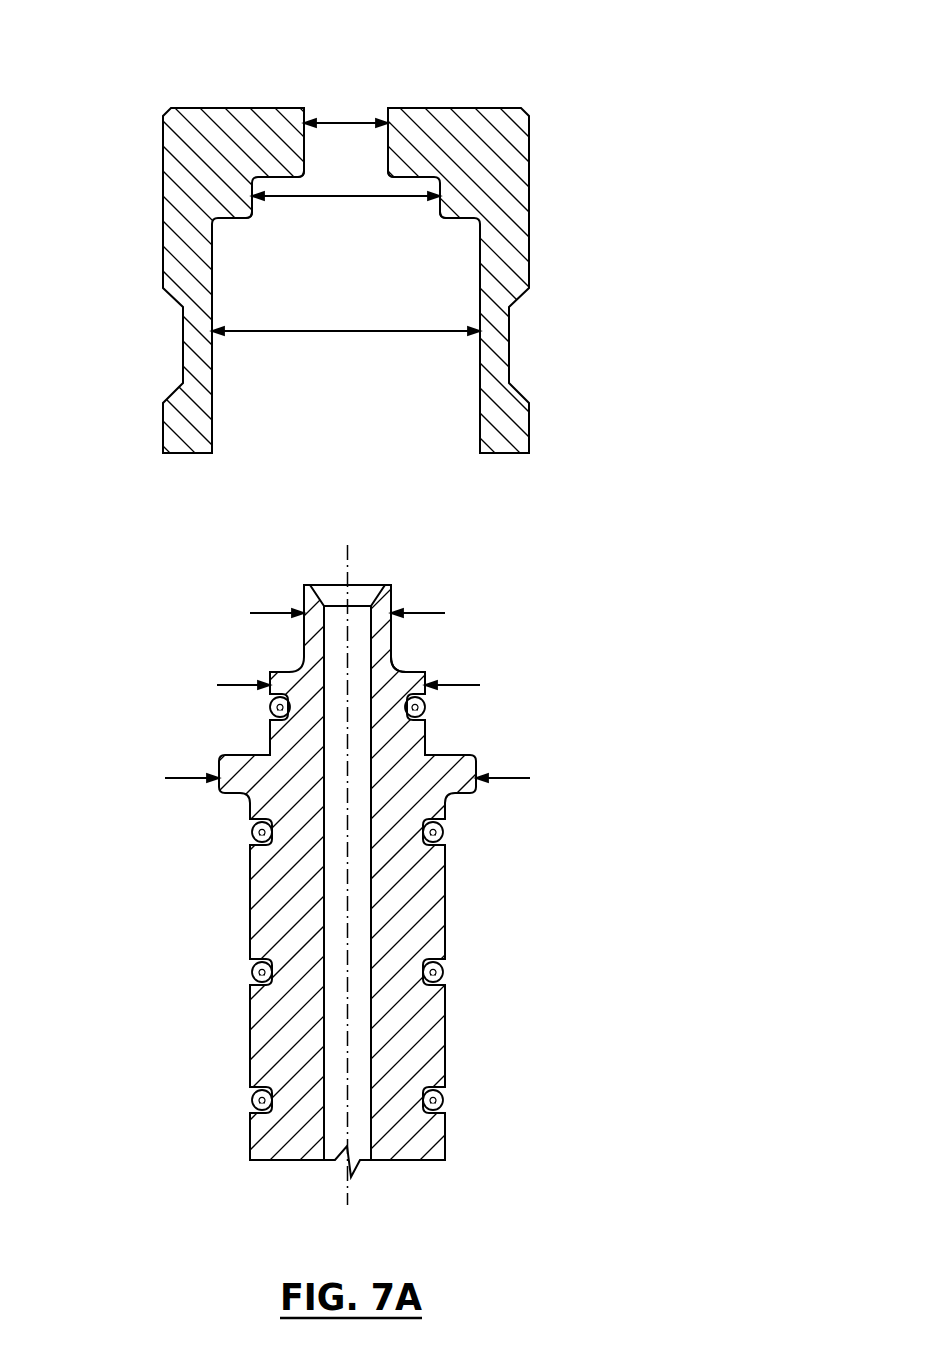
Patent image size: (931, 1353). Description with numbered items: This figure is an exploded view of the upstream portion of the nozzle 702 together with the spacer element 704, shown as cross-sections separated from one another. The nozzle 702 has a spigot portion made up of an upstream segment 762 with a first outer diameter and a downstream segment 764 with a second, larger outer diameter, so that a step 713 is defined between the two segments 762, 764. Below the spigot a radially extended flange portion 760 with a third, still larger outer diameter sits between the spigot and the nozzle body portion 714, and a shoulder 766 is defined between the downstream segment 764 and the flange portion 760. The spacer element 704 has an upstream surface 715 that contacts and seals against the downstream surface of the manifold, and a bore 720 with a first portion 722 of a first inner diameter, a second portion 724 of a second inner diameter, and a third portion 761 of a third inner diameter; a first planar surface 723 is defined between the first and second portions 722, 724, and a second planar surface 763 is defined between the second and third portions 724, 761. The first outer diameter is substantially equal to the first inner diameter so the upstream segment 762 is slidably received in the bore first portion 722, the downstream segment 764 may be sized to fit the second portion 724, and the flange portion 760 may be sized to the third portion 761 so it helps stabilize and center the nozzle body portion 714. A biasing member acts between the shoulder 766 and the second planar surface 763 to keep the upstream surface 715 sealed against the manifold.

The nozzle 702 is at (490, 862).
The spacer element 704 is at (610, 199).
The step 713 is at (412, 668).
The nozzle body portion 714 is at (443, 1030).
The upstream surface 715 is at (237, 110).
The bore 720 is at (370, 306).
The bore first portion 722 is at (305, 152).
The first planar surface 723 is at (440, 192).
The bore second portion 724 is at (243, 233).
The radially extended flange portion 760 is at (215, 787).
The bore third portion 761 is at (213, 358).
The upstream segment 762 is at (304, 633).
The second planar surface 763 is at (487, 236).
The downstream segment 764 is at (268, 736).
The shoulder 766 is at (456, 758).